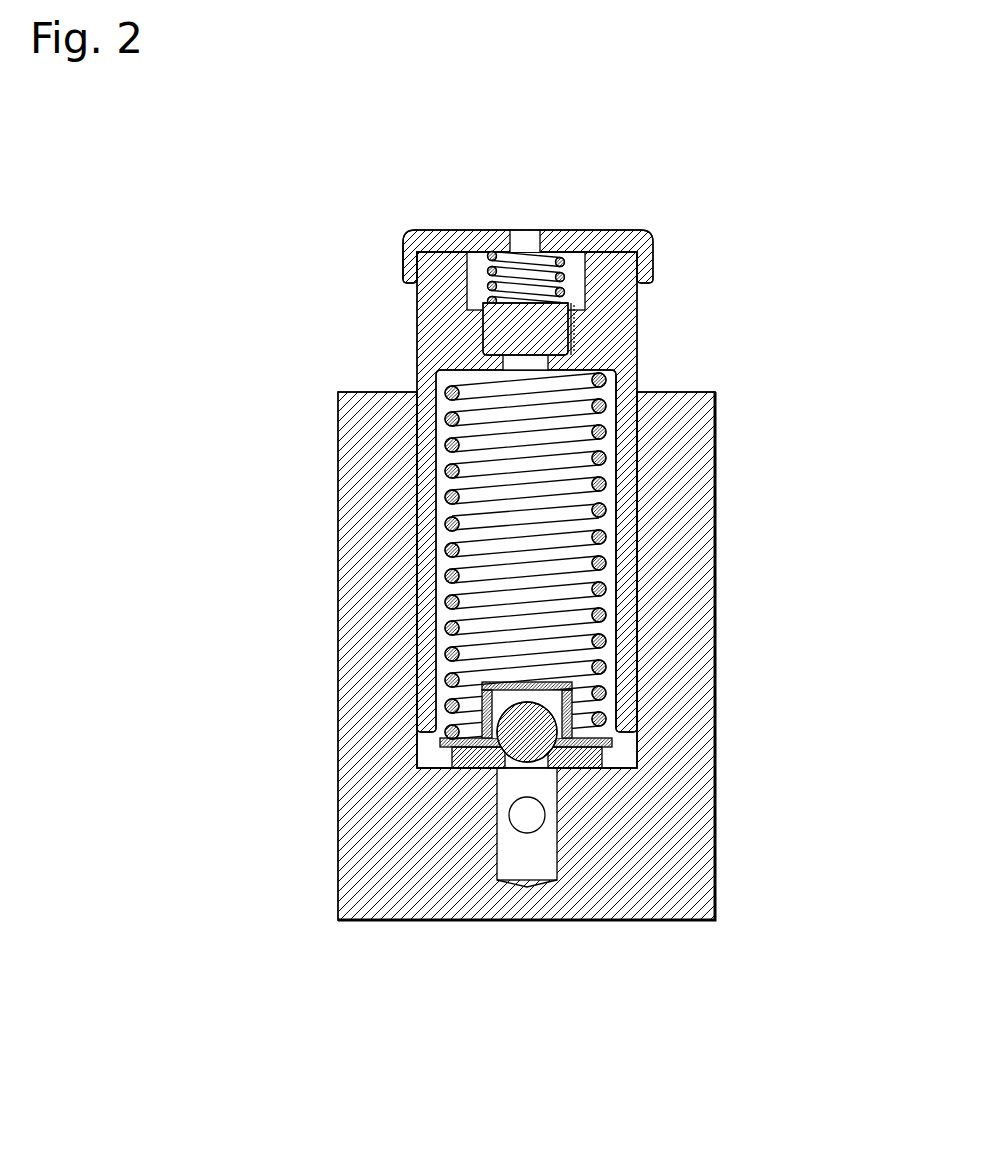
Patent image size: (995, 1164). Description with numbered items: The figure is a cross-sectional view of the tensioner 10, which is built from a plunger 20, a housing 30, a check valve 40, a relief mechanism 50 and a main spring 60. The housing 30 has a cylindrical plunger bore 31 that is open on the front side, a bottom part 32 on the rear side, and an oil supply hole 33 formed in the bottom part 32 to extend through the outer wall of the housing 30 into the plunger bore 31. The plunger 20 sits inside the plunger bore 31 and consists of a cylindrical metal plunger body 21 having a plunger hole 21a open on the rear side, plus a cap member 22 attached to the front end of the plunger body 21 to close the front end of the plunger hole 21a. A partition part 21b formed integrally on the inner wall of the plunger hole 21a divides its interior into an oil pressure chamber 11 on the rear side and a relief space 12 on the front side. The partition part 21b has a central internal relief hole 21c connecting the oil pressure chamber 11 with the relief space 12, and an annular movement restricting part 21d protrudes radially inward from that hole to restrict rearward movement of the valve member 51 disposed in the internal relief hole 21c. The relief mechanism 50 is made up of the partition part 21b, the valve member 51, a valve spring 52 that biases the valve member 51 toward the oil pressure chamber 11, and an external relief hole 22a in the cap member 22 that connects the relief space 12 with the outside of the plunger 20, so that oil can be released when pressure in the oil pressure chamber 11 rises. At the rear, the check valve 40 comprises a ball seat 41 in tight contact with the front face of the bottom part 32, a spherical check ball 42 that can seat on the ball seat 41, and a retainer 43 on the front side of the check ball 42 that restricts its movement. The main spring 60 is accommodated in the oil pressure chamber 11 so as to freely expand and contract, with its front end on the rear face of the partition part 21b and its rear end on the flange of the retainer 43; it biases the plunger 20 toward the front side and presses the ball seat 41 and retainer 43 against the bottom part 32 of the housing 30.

The tensioner 10 is at (207, 193).
The oil pressure chamber 11 is at (452, 597).
The relief space 12 is at (403, 243).
The plunger 20 is at (818, 175).
The plunger body 21 is at (637, 273).
The plunger hole 21a is at (613, 482).
The partition part 21b is at (577, 325).
The internal relief hole 21c is at (570, 333).
The movement restricting part 21d is at (550, 363).
The cap member 22 is at (605, 232).
The external relief hole 22a is at (523, 240).
The housing 30 is at (333, 468).
The plunger bore 31 is at (432, 750).
The bottom part 32 is at (460, 837).
The oil supply hole 33 is at (528, 815).
The check valve 40 is at (821, 670).
The ball seat 41 is at (600, 754).
The check ball 42 is at (558, 728).
The retainer 43 is at (572, 695).
The relief mechanism 50 is at (262, 278).
The valve member 51 is at (483, 325).
The valve spring 52 is at (480, 277).
The main spring 60 is at (607, 615).